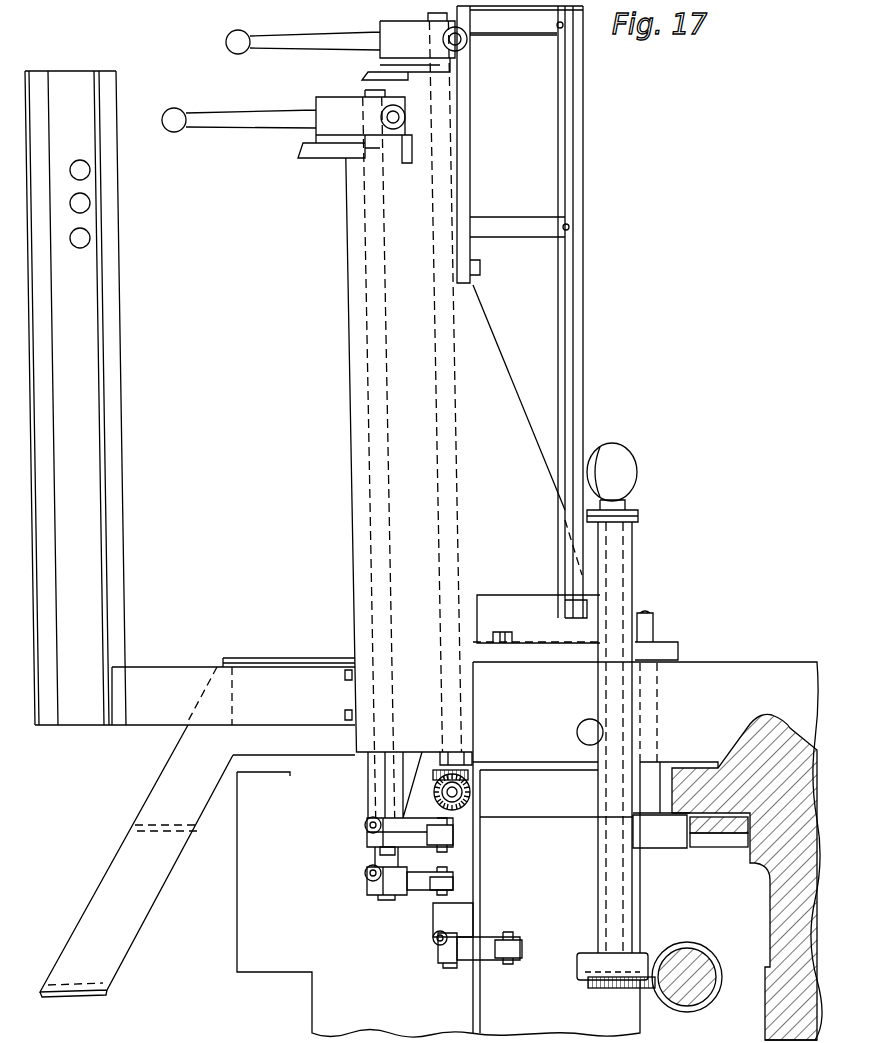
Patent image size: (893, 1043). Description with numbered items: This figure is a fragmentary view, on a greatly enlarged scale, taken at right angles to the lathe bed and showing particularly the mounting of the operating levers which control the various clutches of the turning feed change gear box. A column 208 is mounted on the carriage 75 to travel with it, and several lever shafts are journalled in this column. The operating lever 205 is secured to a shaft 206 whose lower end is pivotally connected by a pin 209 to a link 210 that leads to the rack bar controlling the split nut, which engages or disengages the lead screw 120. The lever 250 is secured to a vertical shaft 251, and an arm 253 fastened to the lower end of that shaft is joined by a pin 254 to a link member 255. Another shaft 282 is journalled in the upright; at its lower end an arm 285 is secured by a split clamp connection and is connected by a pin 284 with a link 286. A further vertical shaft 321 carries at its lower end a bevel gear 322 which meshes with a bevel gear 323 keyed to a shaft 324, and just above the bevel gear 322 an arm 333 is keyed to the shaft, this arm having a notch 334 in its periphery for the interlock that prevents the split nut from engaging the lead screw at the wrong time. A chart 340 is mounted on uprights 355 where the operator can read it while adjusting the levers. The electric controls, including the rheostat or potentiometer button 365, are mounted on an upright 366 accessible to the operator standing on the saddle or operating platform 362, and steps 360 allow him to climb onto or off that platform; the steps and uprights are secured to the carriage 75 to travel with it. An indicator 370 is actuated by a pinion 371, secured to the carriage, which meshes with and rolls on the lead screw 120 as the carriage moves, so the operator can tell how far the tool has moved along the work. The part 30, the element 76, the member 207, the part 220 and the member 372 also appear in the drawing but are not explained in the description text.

The frame wall 30 is at (770, 1002).
The carriage 75 is at (723, 660).
The cam block 76 is at (778, 728).
The lead screw 120 is at (682, 956).
The operating lever 205 is at (323, 42).
The shaft 206 is at (453, 965).
The clamp arm 207 is at (493, 958).
The column 208 is at (352, 436).
The pin 209 is at (510, 935).
The link 210 is at (522, 948).
The shelf 220 is at (736, 855).
The lever 250 is at (255, 118).
The vertical shaft 251 is at (365, 218).
The arm 253 is at (420, 847).
The pin 254 is at (387, 825).
The link member 255 is at (453, 835).
The shaft 282 is at (387, 898).
The pin 284 is at (443, 867).
The arm 285 is at (418, 885).
The link 286 is at (455, 883).
The vertical shaft 321 is at (460, 598).
The bevel gear 322 is at (467, 775).
The bevel gear 323 is at (455, 793).
The shaft 324 is at (463, 805).
The arm 333 is at (470, 758).
The notch 334 is at (458, 753).
The chart 340 is at (532, 13).
The uprights 355 is at (578, 418).
The steps 360 is at (138, 912).
The saddle or operating platform 362 is at (290, 660).
The rheostat or potentiometer control button 365 is at (86, 174).
The upright 366 is at (95, 343).
The indicator 370 is at (630, 470).
The pinion 371 is at (600, 990).
The post 372 is at (622, 598).